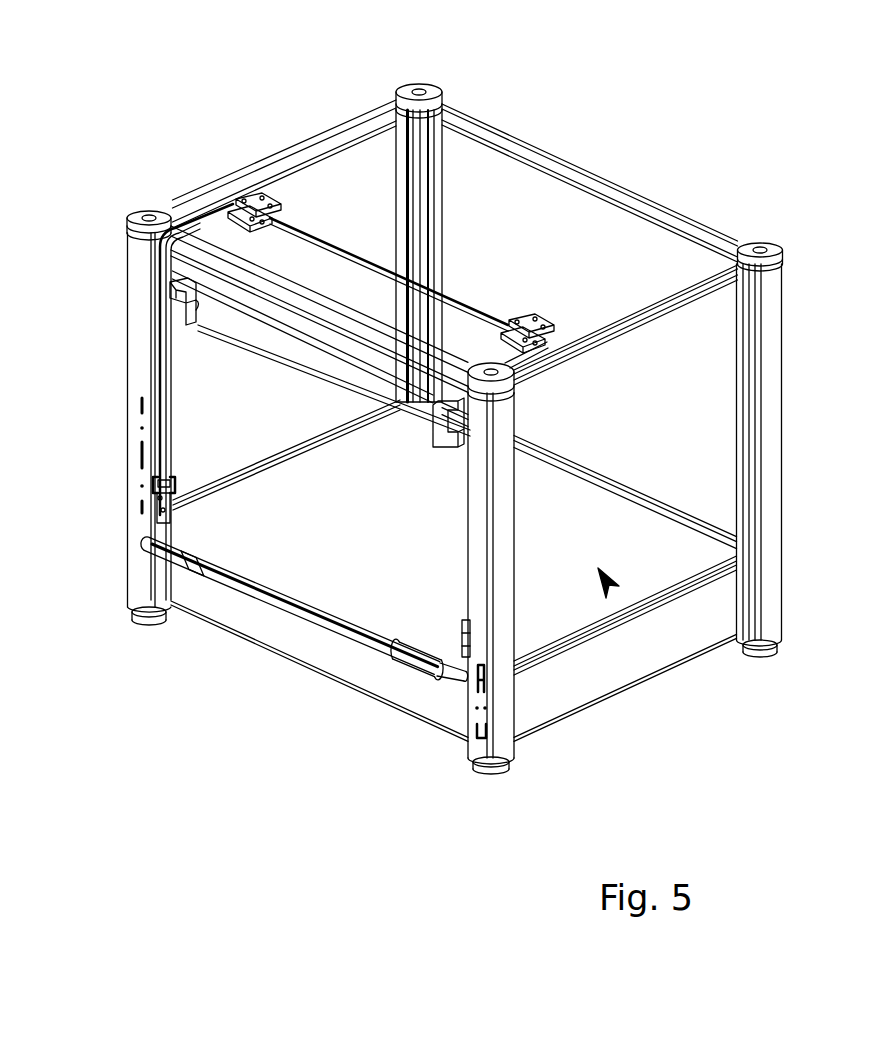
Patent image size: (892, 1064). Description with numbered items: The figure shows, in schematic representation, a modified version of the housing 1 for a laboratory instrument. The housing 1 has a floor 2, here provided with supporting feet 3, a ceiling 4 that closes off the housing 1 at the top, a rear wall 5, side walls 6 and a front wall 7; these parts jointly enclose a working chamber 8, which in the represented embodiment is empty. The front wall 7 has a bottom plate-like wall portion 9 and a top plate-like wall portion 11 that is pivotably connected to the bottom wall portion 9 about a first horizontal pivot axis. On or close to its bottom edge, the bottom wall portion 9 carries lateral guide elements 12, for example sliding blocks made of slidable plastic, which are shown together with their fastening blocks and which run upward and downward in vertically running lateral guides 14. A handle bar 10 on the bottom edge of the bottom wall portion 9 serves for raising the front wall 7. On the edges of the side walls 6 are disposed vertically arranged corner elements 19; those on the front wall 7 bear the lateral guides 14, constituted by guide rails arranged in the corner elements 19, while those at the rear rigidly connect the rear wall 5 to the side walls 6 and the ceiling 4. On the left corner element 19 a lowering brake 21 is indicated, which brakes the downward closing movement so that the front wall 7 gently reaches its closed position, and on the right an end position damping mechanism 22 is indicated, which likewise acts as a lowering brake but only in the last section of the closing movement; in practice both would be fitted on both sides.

The housing 1 is at (168, 62).
The floor 2 is at (687, 647).
The supporting feet 3 is at (148, 622).
The ceiling 4 is at (662, 245).
The rear wall 5 is at (590, 196).
The side walls 6 is at (325, 170).
The front wall 7 is at (180, 367).
The working chamber 8 is at (614, 592).
The bottom wall portion 9 is at (450, 650).
The handle bar 10 is at (260, 592).
The top wall portion 11 is at (177, 268).
The lateral guide elements 12 is at (160, 490).
The lateral guides 14 is at (165, 404).
The corner elements 19 is at (135, 565).
The lowering brake 21 is at (143, 460).
The end position damping mechanism 22 is at (468, 735).